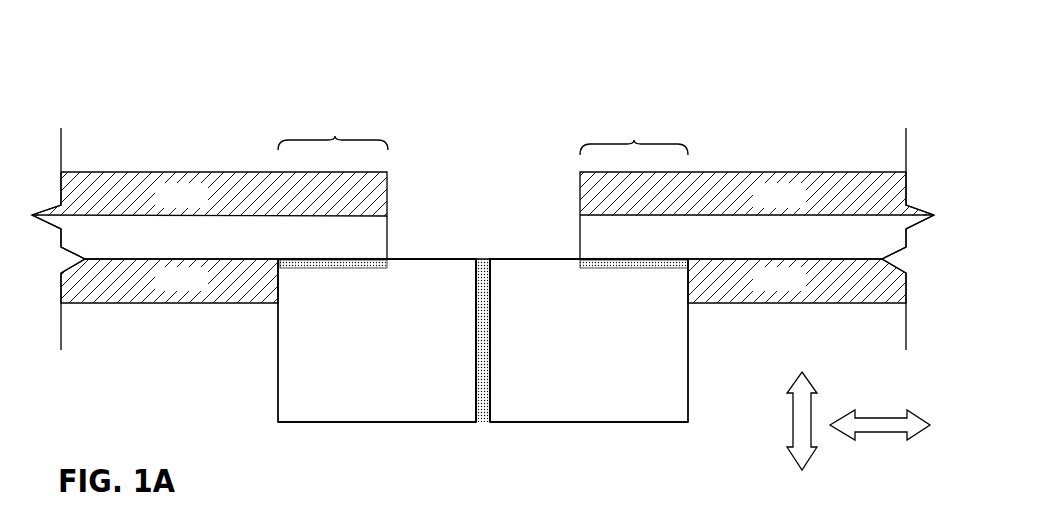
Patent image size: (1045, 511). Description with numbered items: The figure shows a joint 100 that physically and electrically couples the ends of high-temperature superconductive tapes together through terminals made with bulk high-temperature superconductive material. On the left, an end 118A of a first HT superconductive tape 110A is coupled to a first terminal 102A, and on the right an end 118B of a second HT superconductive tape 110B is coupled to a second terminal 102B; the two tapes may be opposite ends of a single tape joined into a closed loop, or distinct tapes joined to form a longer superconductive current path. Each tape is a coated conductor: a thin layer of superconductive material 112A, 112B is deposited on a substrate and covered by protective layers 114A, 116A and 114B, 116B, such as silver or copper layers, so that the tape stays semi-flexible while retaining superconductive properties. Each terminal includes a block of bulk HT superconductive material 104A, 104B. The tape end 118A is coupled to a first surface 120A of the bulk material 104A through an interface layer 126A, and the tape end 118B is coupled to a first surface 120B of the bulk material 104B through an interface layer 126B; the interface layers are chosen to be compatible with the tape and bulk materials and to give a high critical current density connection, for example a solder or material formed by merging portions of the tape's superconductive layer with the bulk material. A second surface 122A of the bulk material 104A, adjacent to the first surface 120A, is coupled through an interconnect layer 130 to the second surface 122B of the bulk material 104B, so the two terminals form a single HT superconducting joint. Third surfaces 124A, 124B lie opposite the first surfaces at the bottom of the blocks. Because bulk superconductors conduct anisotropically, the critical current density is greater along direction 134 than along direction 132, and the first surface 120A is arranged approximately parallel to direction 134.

The joint 100 is at (120, 40).
The HT superconductive tape 110A is at (142, 125).
The HT superconductive tape 110B is at (794, 135).
The layer of superconductive material 112A is at (203, 248).
The layer of superconductive material 112B is at (801, 248).
The protective layer 114A is at (203, 206).
The protective layer 114B is at (801, 206).
The protective layer 116A is at (203, 289).
The protective layer 116B is at (801, 289).
The end of HT superconductive tape 118A is at (335, 138).
The end of HT superconductive tape 118B is at (634, 142).
The terminal 102A is at (237, 394).
The terminal 102B is at (727, 352).
The bulk HT superconductive material 104A is at (340, 402).
The bulk HT superconductive material 104B is at (673, 414).
The first surface 120A is at (397, 259).
The first surface 120B is at (567, 259).
The second surface 122A is at (476, 338).
The second surface 122B is at (490, 338).
The third surface 124A is at (402, 423).
The third surface 124B is at (540, 423).
The interface layer 126A is at (338, 268).
The interface layer 126B is at (632, 268).
The interconnect layer 130 is at (483, 423).
The direction 132 is at (793, 420).
The direction 134 is at (867, 418).